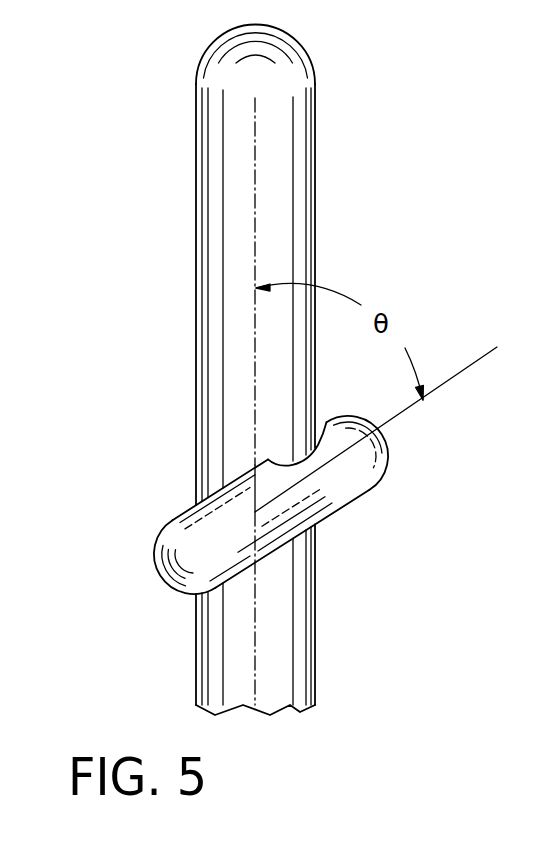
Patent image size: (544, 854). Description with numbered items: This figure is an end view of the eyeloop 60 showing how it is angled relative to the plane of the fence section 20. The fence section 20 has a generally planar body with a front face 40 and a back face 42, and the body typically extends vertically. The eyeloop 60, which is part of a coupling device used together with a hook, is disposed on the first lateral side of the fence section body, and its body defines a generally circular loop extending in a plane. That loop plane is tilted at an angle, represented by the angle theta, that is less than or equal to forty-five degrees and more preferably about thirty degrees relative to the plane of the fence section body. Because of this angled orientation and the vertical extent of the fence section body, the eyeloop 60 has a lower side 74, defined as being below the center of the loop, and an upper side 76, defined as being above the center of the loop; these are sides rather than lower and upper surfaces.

The fence section 20 is at (350, 89).
The front face 40 is at (315, 220).
The back face 42 is at (197, 137).
The eyeloop 60 is at (318, 497).
The lower side 74 is at (172, 583).
The upper side 76 is at (382, 444).